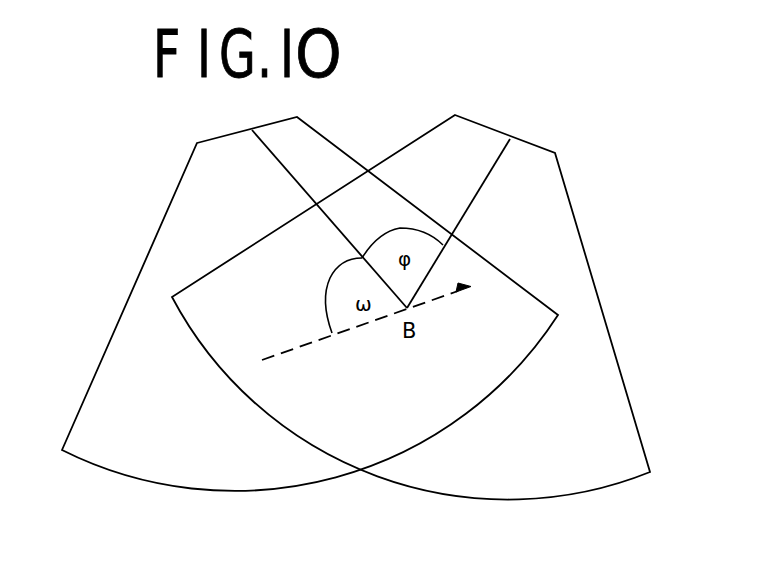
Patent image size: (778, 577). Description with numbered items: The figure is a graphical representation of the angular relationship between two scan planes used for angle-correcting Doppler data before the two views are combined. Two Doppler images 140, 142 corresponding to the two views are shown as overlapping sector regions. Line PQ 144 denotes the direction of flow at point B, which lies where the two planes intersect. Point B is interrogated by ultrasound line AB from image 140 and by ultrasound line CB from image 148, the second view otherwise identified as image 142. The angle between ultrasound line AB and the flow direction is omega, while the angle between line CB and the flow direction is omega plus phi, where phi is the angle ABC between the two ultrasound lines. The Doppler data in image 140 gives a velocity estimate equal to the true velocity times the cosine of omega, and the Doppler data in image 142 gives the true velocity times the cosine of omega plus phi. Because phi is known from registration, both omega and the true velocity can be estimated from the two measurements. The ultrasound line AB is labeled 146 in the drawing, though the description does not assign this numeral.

The Doppler image 140 is at (164, 211).
The Doppler image 142 is at (588, 240).
The line PQ 144 is at (322, 334).
The center line A-B of first image plane 146 is at (283, 171).
The image 148 is at (477, 199).